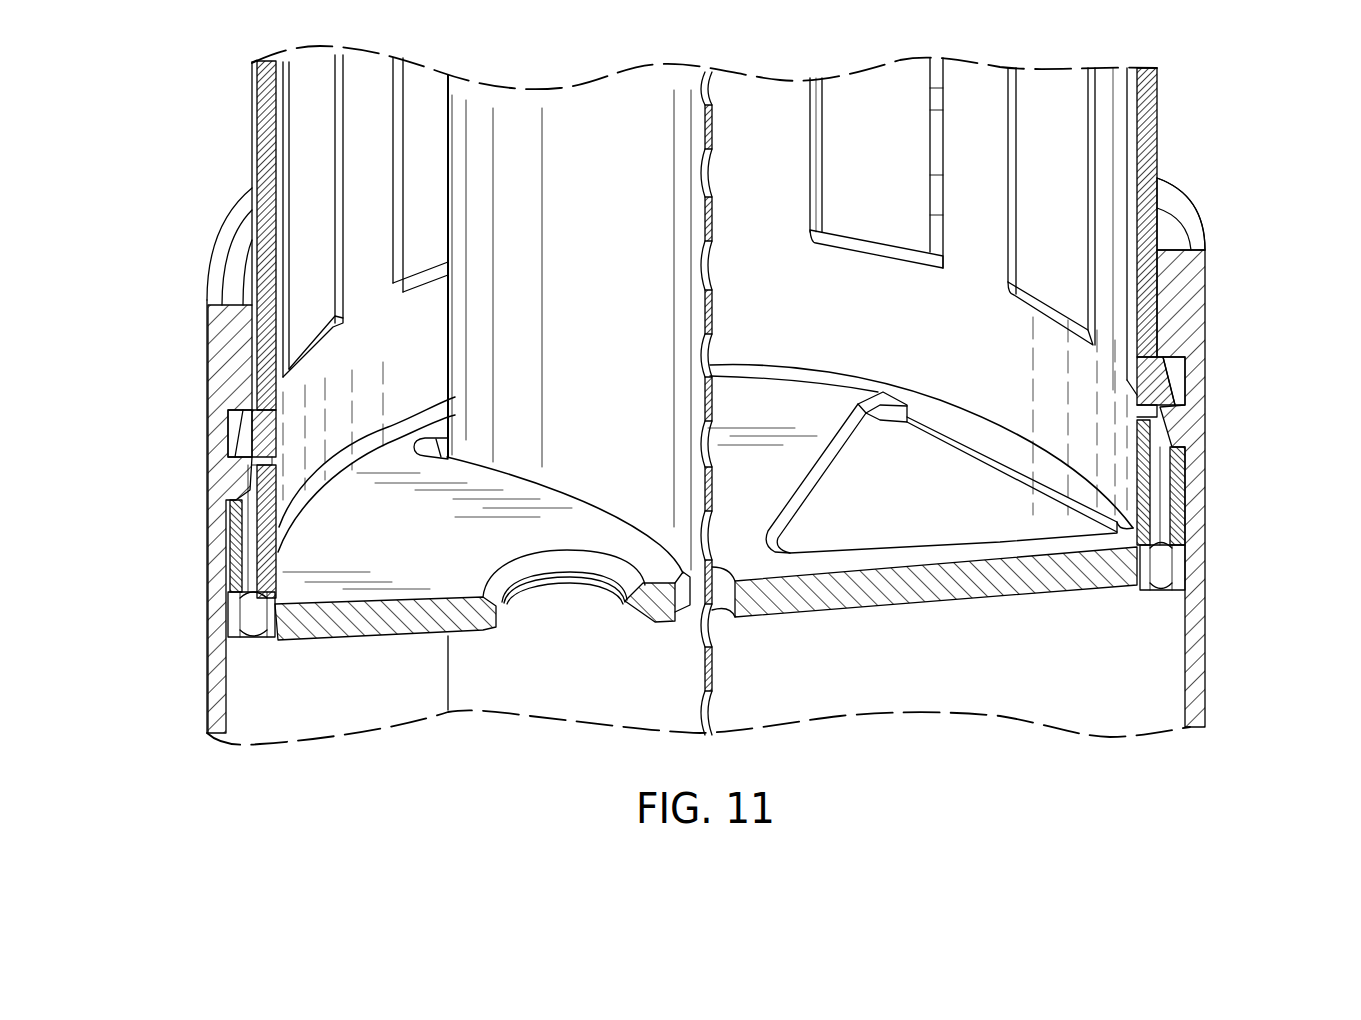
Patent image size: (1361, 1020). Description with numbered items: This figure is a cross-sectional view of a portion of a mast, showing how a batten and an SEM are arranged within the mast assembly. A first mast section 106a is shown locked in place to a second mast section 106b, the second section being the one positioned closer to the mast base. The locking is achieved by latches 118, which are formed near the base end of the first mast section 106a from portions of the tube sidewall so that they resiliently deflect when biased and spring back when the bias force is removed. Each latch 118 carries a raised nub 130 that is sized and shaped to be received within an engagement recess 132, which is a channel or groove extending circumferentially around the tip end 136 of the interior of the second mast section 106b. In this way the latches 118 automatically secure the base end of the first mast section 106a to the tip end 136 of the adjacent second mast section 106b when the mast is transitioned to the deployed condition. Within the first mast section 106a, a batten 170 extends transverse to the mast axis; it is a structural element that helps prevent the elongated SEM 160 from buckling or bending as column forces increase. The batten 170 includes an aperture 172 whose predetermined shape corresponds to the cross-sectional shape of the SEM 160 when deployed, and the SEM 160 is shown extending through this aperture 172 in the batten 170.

The first mast section 106a is at (1208, 121).
The second mast section 106b is at (1268, 657).
The latch 118 is at (897, 149).
The raised nub 130 is at (270, 433).
The engagement recess 132 is at (230, 436).
The tip end 136 is at (1184, 288).
The SEM 160 is at (612, 294).
The batten 170 is at (387, 620).
The aperture 172 is at (446, 458).